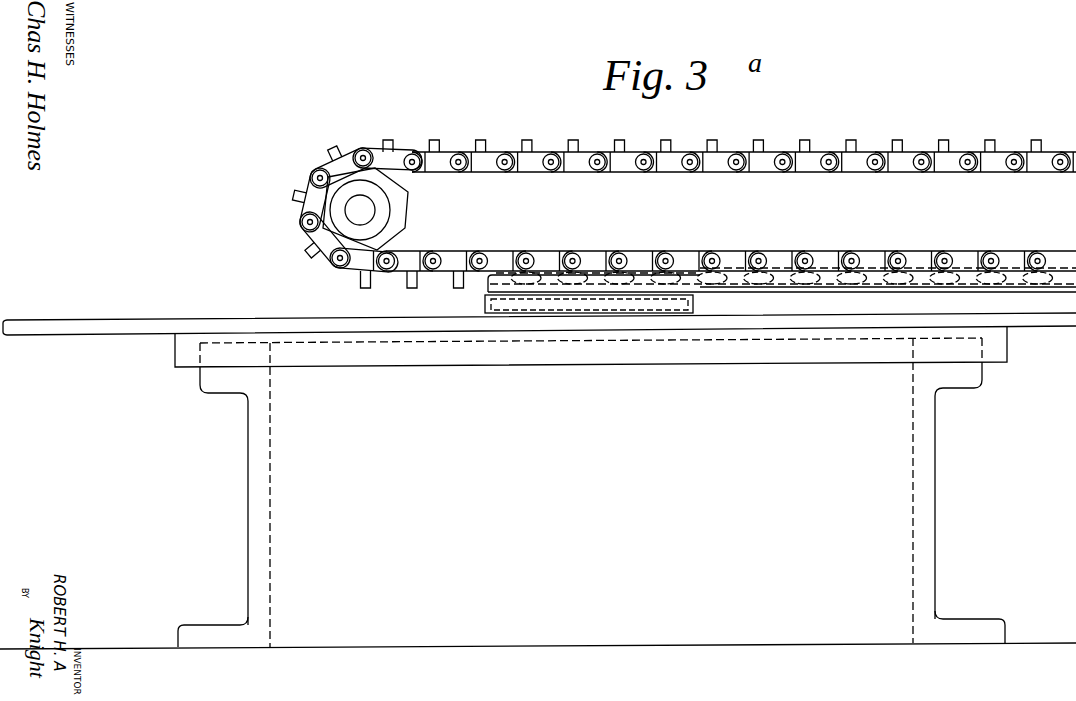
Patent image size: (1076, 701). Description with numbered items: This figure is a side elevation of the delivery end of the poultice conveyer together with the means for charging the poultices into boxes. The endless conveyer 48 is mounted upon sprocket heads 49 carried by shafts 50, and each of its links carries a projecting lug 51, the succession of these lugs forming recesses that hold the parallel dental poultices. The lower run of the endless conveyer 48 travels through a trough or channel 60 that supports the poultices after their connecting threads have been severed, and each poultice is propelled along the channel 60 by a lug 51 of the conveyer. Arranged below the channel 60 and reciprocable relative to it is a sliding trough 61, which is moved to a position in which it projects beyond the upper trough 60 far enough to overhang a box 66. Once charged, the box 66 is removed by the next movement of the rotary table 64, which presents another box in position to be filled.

The endless conveyer 48 is at (1003, 158).
The sprocket head 49 is at (337, 195).
The shaft 50 is at (363, 213).
The projecting lug 51 is at (371, 130).
The trough or channel 60 is at (868, 268).
The sliding trough 61 is at (487, 280).
The rotary table 64 is at (135, 313).
The box 66 is at (615, 314).